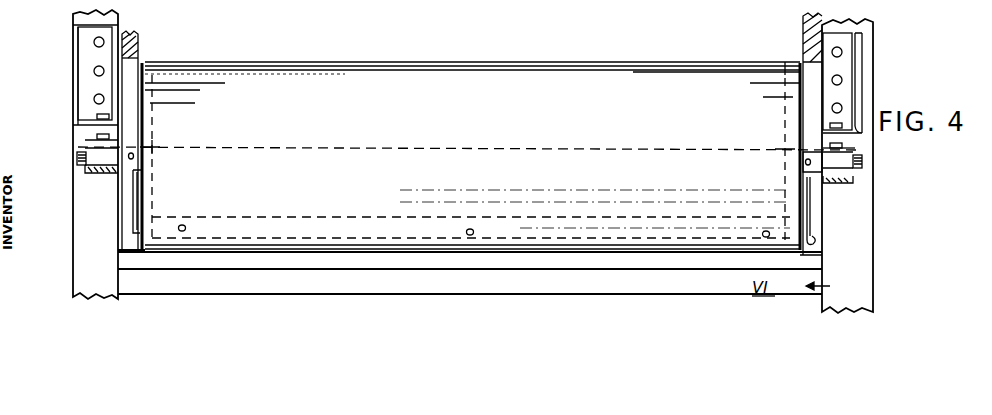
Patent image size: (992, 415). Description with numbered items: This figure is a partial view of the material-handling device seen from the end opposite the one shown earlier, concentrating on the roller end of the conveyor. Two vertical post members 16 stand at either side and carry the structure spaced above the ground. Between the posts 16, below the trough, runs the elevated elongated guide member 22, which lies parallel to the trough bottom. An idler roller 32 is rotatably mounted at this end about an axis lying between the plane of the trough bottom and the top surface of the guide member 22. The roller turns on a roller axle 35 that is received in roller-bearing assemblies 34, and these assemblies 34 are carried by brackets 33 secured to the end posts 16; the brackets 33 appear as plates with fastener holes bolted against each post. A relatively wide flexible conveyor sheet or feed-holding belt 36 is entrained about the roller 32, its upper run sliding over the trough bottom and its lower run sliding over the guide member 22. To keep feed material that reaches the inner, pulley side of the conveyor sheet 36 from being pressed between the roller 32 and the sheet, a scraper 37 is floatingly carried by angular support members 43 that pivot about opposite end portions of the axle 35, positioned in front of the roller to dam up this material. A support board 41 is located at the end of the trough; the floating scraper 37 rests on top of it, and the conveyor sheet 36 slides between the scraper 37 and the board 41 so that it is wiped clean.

The vertical post member 16 is at (80, 270).
The guide member 22 is at (355, 263).
The idler roller 32 is at (131, 76).
The bracket 33 is at (73, 68).
The roller-bearing assembly 34 is at (85, 173).
The roller axle 35 is at (73, 155).
The conveyor sheet 36 is at (221, 44).
The scraper 37 is at (449, 152).
The support board 41 is at (490, 288).
The angular support member 43 is at (145, 218).